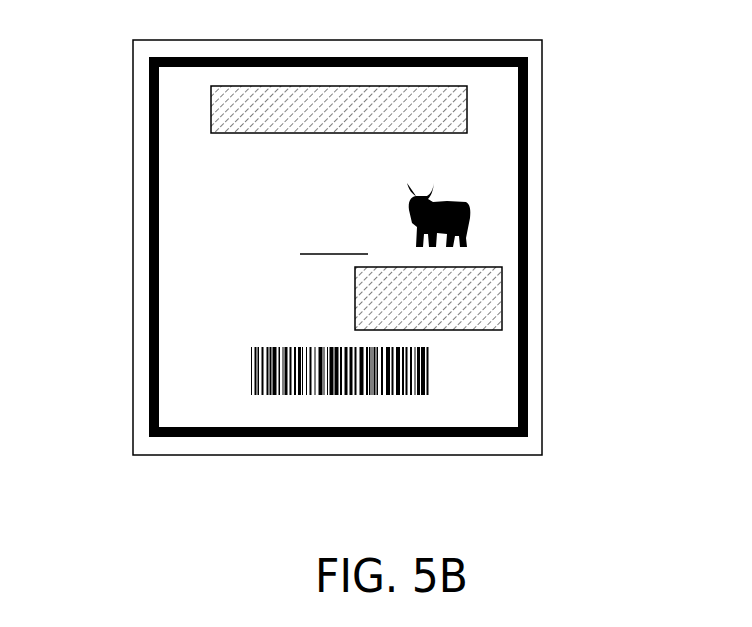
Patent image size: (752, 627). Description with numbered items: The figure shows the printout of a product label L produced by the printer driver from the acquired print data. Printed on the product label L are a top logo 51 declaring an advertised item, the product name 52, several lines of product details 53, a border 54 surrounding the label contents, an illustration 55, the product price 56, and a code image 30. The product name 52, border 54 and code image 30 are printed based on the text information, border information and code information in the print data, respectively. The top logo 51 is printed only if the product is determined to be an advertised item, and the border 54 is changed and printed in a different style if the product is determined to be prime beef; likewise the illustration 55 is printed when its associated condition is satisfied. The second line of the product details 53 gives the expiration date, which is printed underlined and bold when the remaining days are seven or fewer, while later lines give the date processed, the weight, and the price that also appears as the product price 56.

The product label L is at (542, 84).
The border 54 is at (528, 137).
The top logo 51 is at (209, 126).
The product name 52 is at (185, 168).
The product details 53 is at (118, 205).
The illustration 55 is at (475, 220).
The product price 56 is at (504, 294).
The code image 30 is at (340, 397).